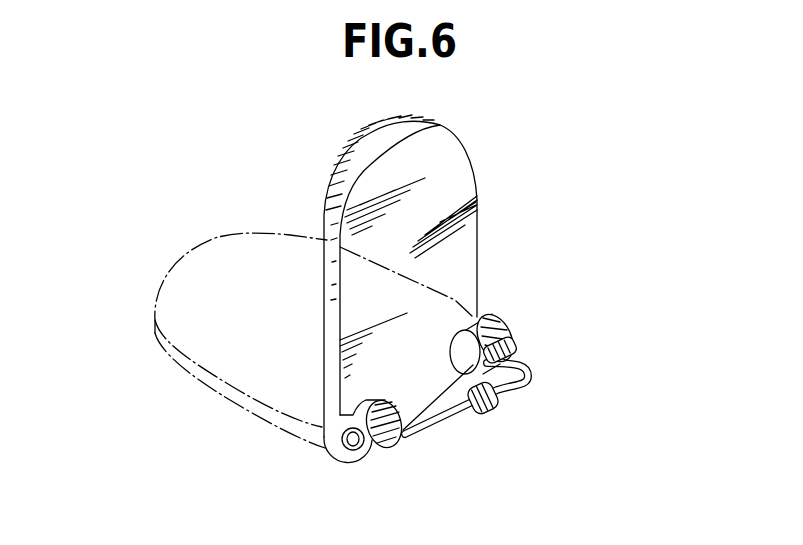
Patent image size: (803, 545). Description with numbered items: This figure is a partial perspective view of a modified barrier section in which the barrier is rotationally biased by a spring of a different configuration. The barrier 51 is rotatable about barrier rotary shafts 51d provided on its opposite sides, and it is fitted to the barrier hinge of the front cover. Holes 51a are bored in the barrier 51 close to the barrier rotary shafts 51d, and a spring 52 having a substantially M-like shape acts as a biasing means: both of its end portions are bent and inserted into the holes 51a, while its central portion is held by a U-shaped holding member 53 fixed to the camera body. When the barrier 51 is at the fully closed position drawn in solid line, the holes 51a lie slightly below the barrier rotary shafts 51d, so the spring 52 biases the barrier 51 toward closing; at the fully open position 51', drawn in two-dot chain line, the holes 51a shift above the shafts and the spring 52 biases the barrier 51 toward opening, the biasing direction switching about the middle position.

The barrier 51 is at (432, 289).
The fully open position 51' is at (314, 311).
The holes 51a is at (488, 317).
The barrier rotary shafts 51d is at (515, 322).
The spring 52 is at (533, 368).
The U-shaped holding member 53 is at (500, 413).